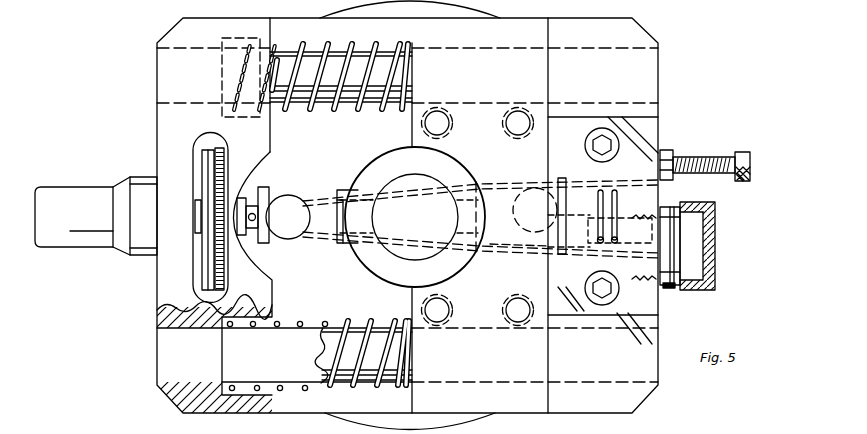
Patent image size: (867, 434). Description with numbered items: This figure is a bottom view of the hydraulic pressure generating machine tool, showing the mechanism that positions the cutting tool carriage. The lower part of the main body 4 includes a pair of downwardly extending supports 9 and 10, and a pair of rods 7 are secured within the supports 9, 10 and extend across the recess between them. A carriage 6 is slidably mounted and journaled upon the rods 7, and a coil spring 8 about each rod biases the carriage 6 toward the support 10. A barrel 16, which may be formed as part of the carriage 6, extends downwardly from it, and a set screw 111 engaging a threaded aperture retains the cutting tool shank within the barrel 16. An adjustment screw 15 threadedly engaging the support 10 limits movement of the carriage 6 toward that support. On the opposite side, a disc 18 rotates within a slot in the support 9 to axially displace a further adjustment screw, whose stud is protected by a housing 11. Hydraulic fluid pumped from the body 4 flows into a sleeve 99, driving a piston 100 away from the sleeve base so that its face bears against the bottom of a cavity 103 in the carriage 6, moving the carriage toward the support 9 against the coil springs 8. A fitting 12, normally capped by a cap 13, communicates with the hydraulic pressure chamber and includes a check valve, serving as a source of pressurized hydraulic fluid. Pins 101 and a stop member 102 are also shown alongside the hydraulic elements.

The main body 4 is at (161, 28).
The carriage 6 is at (482, 125).
The rods 7 is at (289, 50).
The coil springs 8 is at (306, 46).
The support 9 is at (167, 140).
The support 10 is at (651, 133).
The housing 11 is at (78, 186).
The fitting 12 is at (664, 291).
The cap 13 is at (716, 228).
The adjustment screw 15 is at (742, 150).
The barrel 16 is at (454, 161).
The disc 18 is at (223, 277).
The sleeve 99 is at (519, 191).
The piston 100 is at (515, 243).
The pins 101 is at (599, 211).
The stop member 102 is at (597, 212).
The cavity 103 is at (515, 186).
The set screw 111 is at (334, 207).